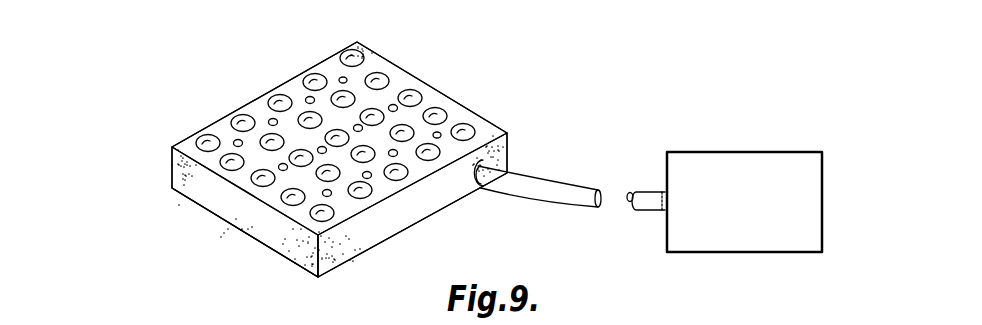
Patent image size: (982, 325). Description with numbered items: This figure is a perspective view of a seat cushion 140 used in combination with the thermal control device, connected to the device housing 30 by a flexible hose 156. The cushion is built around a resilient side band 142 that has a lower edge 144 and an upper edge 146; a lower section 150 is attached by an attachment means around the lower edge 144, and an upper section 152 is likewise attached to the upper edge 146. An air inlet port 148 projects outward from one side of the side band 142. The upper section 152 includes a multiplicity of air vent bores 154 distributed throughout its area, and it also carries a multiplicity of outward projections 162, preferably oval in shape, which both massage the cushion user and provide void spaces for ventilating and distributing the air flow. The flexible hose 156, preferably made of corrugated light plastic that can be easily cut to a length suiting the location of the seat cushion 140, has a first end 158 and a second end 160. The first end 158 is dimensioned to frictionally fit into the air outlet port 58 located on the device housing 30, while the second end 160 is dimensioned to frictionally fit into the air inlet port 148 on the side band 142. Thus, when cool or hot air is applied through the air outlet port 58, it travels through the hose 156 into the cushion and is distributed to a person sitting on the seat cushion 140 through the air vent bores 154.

The seat cushion 140 is at (247, 55).
The side band 142 is at (187, 195).
The lower edge 144 is at (240, 236).
The upper edge 146 is at (443, 93).
The air inlet port 148 is at (478, 164).
The lower section 150 is at (290, 258).
The upper section 152 is at (225, 123).
The air vent bores 154 is at (341, 76).
The flexible hose 156 is at (641, 172).
The first end 158 is at (482, 188).
The second end 160 is at (660, 212).
The outward projections 162 is at (372, 56).
The air outlet port 58 is at (661, 191).
The device housing 30 is at (744, 204).